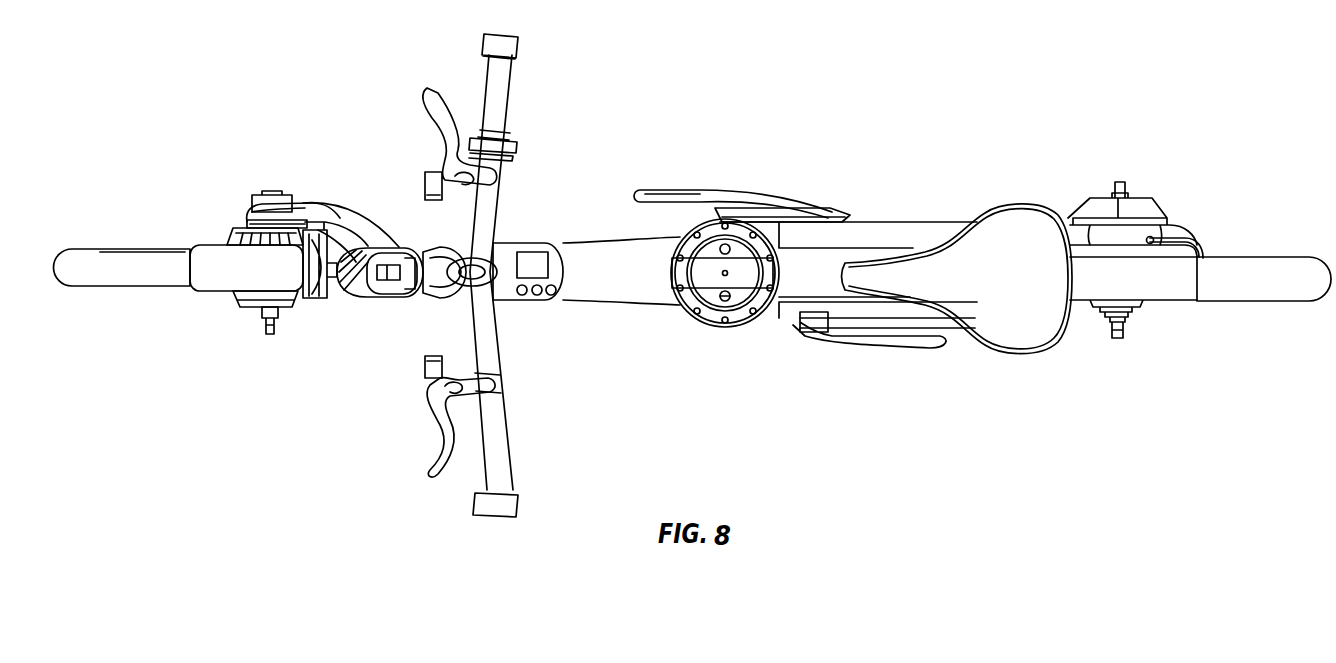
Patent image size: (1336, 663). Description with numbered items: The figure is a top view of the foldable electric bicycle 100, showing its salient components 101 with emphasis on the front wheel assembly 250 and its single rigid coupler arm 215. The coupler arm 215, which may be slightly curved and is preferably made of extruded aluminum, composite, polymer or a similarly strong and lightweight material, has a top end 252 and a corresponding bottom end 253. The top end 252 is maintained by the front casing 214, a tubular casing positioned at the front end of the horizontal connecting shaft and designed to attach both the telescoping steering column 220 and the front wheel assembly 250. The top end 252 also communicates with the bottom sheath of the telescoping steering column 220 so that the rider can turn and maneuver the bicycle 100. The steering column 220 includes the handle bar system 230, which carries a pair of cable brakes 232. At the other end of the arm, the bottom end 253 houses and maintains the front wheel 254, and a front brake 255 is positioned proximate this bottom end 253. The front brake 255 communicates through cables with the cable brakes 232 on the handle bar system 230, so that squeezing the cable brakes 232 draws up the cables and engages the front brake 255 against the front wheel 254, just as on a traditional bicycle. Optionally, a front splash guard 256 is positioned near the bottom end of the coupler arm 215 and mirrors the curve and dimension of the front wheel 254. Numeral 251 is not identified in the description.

The foldable electric bicycle 100 is at (595, 258).
The components 101 is at (636, 285).
The front casing 214 is at (353, 298).
The single rigid coupler arm 215 is at (327, 214).
The telescoping steering column 220 is at (448, 290).
The handle bar system 230 is at (505, 456).
The cable brakes 232 is at (436, 447).
The front wheel assembly 250 is at (100, 272).
The hood 251 is at (314, 205).
The top end 252 is at (362, 237).
The bottom end 253 is at (268, 194).
The front wheel 254 is at (140, 262).
The front brake 255 is at (310, 300).
The front splash guard 256 is at (220, 288).